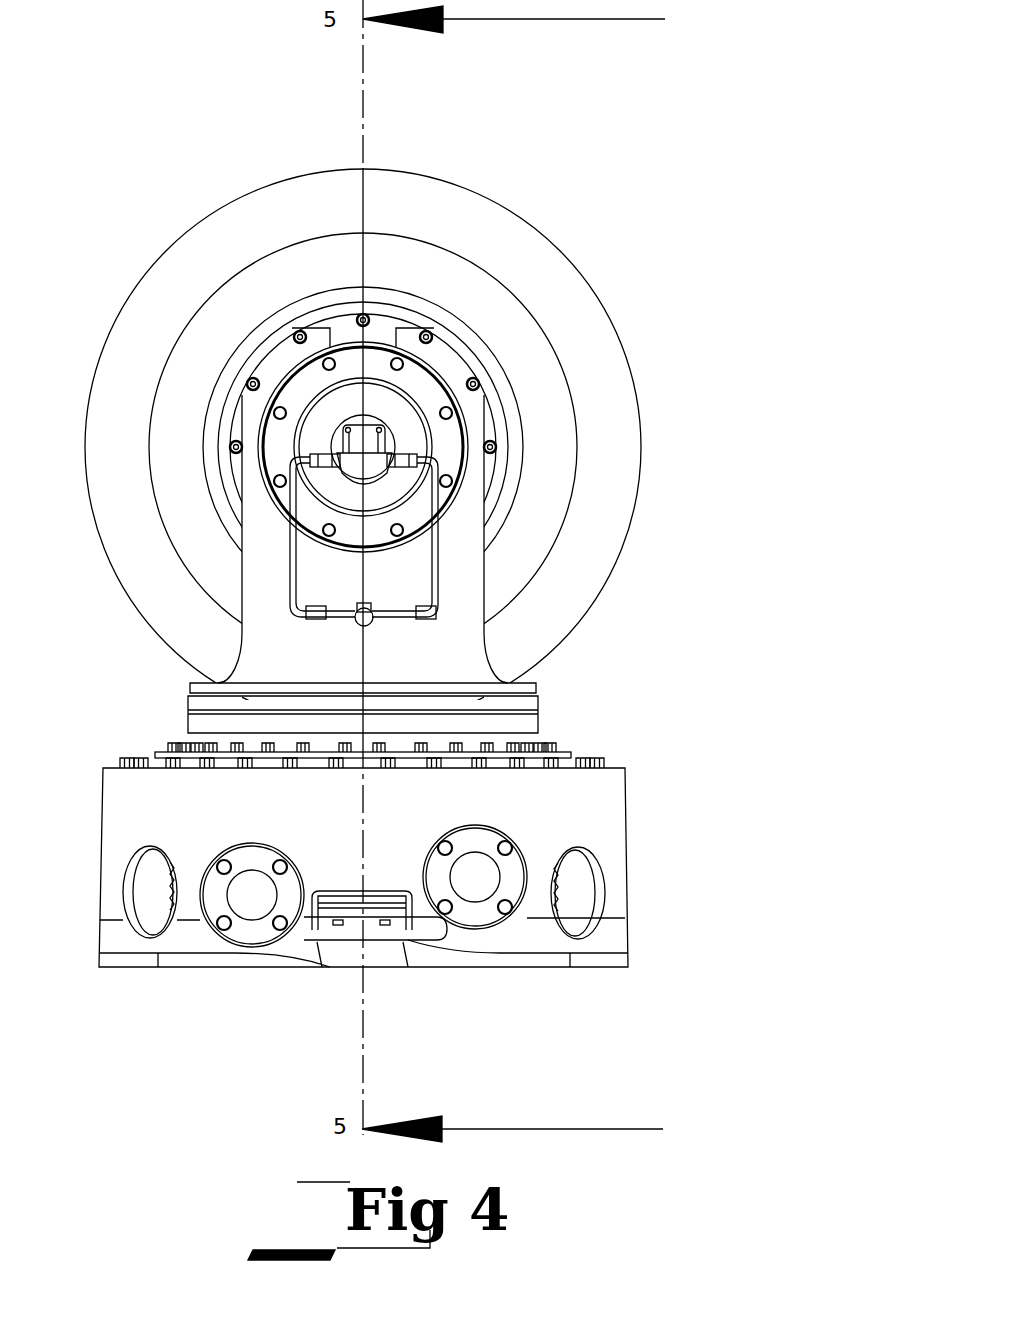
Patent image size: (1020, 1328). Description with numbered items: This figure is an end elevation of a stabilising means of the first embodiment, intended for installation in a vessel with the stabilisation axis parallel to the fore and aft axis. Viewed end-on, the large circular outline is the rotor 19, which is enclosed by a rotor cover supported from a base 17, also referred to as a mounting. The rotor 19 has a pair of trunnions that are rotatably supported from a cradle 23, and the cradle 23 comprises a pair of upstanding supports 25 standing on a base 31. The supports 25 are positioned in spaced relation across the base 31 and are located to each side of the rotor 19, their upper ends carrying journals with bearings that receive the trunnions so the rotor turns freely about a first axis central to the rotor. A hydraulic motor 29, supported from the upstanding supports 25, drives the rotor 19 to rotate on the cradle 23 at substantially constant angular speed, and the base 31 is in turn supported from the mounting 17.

The base 17 is at (602, 797).
The rotor 19 is at (607, 413).
The cradle 23 is at (556, 663).
The upstanding supports 25 is at (462, 566).
The hydraulic motor 29 is at (364, 438).
The base 31 is at (543, 684).